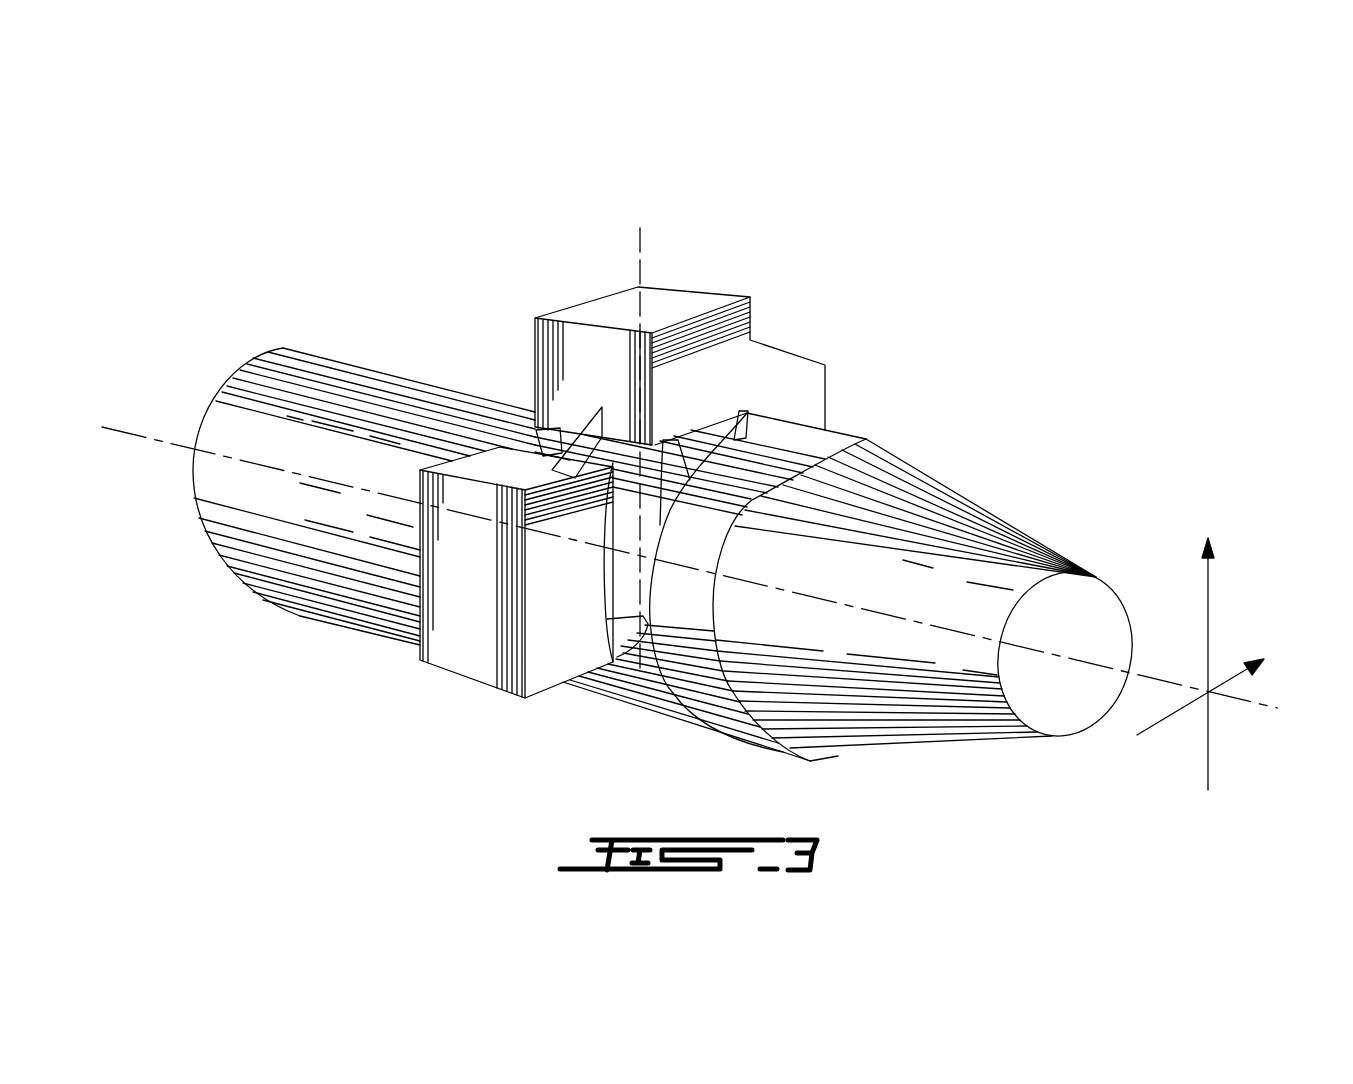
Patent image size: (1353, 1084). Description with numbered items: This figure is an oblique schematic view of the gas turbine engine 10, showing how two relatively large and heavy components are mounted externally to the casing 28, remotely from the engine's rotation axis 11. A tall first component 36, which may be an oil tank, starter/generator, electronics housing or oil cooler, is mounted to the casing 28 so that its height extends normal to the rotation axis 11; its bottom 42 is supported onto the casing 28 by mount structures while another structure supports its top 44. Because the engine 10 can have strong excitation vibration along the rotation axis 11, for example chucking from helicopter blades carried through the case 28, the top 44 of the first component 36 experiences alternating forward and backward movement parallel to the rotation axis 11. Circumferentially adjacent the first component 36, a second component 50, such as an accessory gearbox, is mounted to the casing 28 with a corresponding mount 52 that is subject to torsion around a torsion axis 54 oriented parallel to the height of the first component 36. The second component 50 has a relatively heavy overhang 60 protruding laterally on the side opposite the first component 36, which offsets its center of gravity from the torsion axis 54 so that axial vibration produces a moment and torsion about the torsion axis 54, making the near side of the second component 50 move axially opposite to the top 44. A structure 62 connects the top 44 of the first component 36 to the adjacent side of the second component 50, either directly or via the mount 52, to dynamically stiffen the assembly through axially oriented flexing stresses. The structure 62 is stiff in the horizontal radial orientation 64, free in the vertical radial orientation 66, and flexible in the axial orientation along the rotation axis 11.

The gas turbine engine 10 is at (398, 268).
The rotation axis 11 is at (1066, 653).
The casing 28 is at (482, 407).
The first component 36 is at (388, 466).
The bottom of the first component 42 is at (566, 650).
The top of the first component 44 is at (461, 468).
The second component 50 is at (686, 258).
The mount 52 is at (749, 418).
The torsion axis 54 is at (638, 232).
The overhang 60 is at (828, 352).
The structure 62 is at (588, 432).
The horizontal radial orientation 64 is at (1163, 720).
The vertical radial orientation 66 is at (1208, 607).